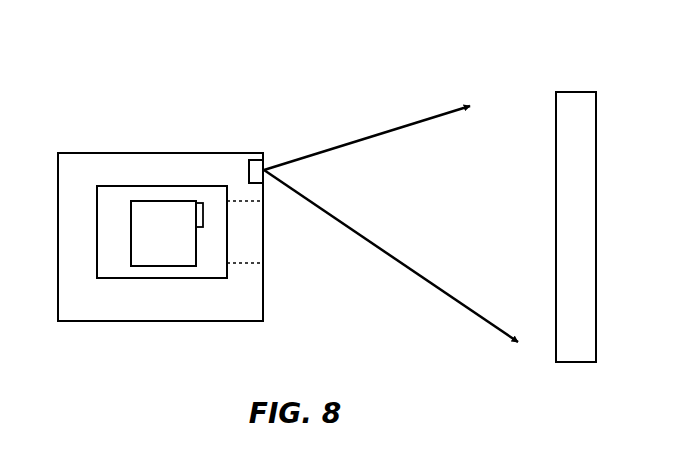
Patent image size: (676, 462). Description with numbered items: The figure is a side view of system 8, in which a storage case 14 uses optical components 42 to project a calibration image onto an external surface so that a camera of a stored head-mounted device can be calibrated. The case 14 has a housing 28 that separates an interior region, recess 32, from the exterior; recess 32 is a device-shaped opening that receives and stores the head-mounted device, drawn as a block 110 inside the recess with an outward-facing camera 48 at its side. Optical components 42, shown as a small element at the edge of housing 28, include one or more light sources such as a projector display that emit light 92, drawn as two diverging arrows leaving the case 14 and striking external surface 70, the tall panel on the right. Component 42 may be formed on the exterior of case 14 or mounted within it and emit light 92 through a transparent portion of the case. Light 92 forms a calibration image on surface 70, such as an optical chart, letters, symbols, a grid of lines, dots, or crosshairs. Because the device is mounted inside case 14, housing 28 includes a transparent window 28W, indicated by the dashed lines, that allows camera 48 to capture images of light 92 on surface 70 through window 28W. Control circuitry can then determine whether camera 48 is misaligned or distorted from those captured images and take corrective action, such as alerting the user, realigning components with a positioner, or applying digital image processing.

The system 8 is at (100, 62).
The case 14 is at (75, 159).
The housing 28 is at (68, 234).
The window 28W is at (257, 234).
The recess 32 is at (120, 193).
The optical components 42 is at (253, 170).
The outward-facing camera 48 is at (203, 217).
The external surface 70 is at (577, 92).
The light 92 is at (367, 138).
The sensor 110 is at (165, 255).